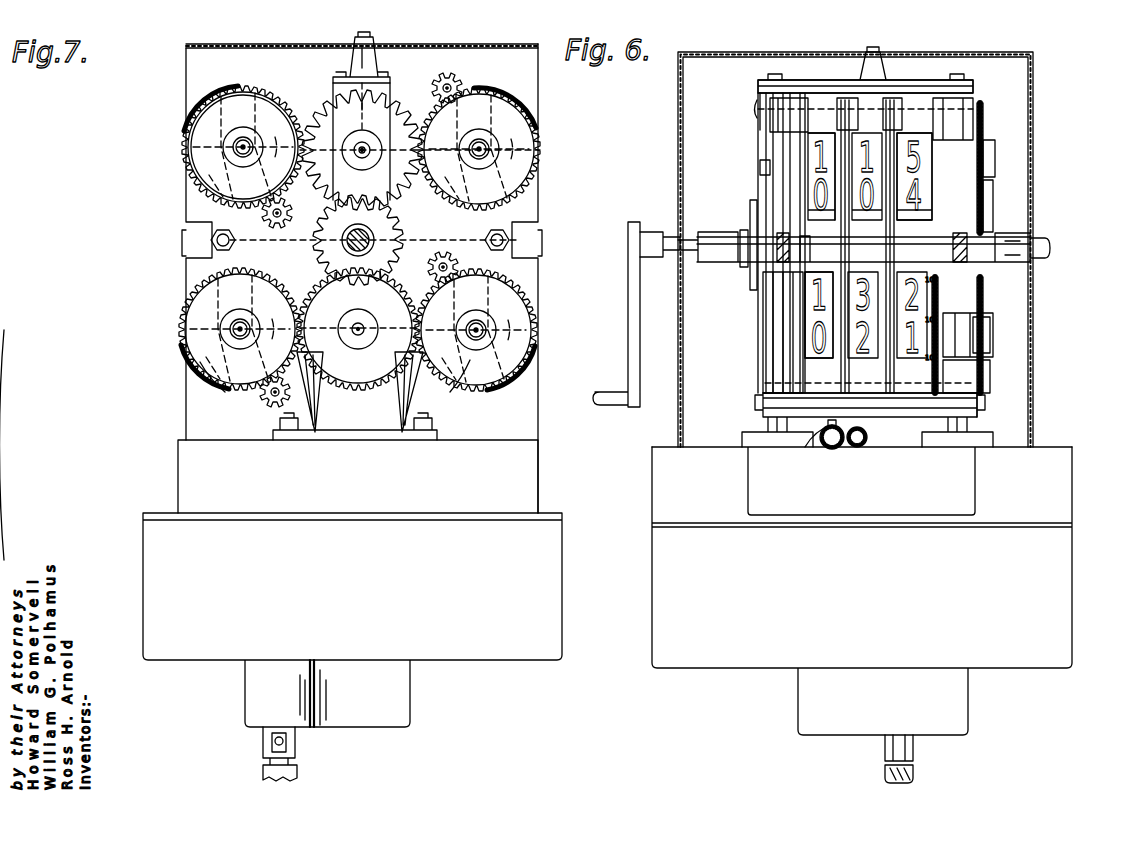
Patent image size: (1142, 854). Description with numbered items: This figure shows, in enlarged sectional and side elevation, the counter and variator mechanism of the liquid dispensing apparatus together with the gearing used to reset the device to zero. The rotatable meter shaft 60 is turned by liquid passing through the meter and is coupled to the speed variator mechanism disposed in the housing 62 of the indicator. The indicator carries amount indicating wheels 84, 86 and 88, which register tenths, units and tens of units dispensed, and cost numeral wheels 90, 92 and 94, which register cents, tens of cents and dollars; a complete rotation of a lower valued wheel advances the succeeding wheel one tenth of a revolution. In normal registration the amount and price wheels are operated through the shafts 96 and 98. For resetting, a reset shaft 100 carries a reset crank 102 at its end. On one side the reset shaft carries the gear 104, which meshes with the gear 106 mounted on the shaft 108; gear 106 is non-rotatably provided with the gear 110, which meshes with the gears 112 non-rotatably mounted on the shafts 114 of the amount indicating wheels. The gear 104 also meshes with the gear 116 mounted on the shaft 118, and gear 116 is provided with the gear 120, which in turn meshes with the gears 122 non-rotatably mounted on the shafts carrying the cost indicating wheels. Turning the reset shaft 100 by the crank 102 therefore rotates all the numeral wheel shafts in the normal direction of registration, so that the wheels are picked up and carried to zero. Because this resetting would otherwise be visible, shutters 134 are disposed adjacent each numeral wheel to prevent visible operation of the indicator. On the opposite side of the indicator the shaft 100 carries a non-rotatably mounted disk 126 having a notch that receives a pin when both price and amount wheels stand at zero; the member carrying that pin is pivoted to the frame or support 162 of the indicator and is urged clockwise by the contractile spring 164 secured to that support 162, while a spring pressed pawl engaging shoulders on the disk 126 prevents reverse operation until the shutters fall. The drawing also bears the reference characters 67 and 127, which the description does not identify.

In FIG. 7, the meter shaft 60 is at (297, 763).
In FIG. 6, the meter shaft 60 is at (912, 779).
In FIG. 7, the housing 62 is at (402, 707).
In FIG. 6, the housing 62 is at (1057, 636).
In FIG. 7, the base frame 67 is at (523, 478).
In FIG. 6, the base frame 67 is at (1050, 488).
In FIG. 7, the amount indicating wheel 84 is at (183, 313).
In FIG. 6, the amount indicating wheel 84 is at (960, 292).
In FIG. 6, the amount indicating wheel 86 is at (983, 310).
In FIG. 7, the amount indicating wheel 88 is at (510, 355).
In FIG. 6, the amount indicating wheel 88 is at (812, 291).
In FIG. 7, the cost numeral wheel 90 is at (205, 120).
In FIG. 6, the cost numeral wheel 90 is at (955, 205).
In FIG. 6, the cost numeral wheel 92 is at (925, 212).
In FIG. 7, the cost numeral wheel 94 is at (506, 173).
In FIG. 6, the cost numeral wheel 94 is at (760, 165).
In FIG. 6, the shaft 96 is at (878, 430).
In FIG. 6, the shaft 98 is at (818, 430).
In FIG. 7, the reset shaft 100 is at (346, 243).
In FIG. 6, the reset shaft 100 is at (693, 238).
In FIG. 6, the reset crank 102 is at (632, 292).
In FIG. 7, the gear 104 is at (312, 240).
In FIG. 6, the gear 104 is at (985, 222).
In FIG. 7, the gear 106 is at (348, 360).
In FIG. 6, the gear 106 is at (985, 378).
In FIG. 7, the shaft 108 is at (360, 345).
In FIG. 7, the gear 110 is at (358, 335).
In FIG. 7, the gears 112 is at (215, 360).
In FIG. 7, the shafts 114 is at (238, 329).
In FIG. 7, the gear 116 is at (333, 122).
In FIG. 6, the gear 116 is at (985, 195).
In FIG. 7, the shaft 118 is at (367, 148).
In FIG. 7, the gear 120 is at (368, 108).
In FIG. 7, the gears 122 is at (200, 152).
In FIG. 6, the disk 126 is at (752, 277).
In FIG. 7, the pivot 127 is at (240, 147).
In FIG. 6, the shutters 134 is at (817, 117).
In FIG. 7, the frame or support 162 is at (347, 122).
In FIG. 6, the frame or support 162 is at (895, 87).
In FIG. 6, the contractile spring 164 is at (762, 98).